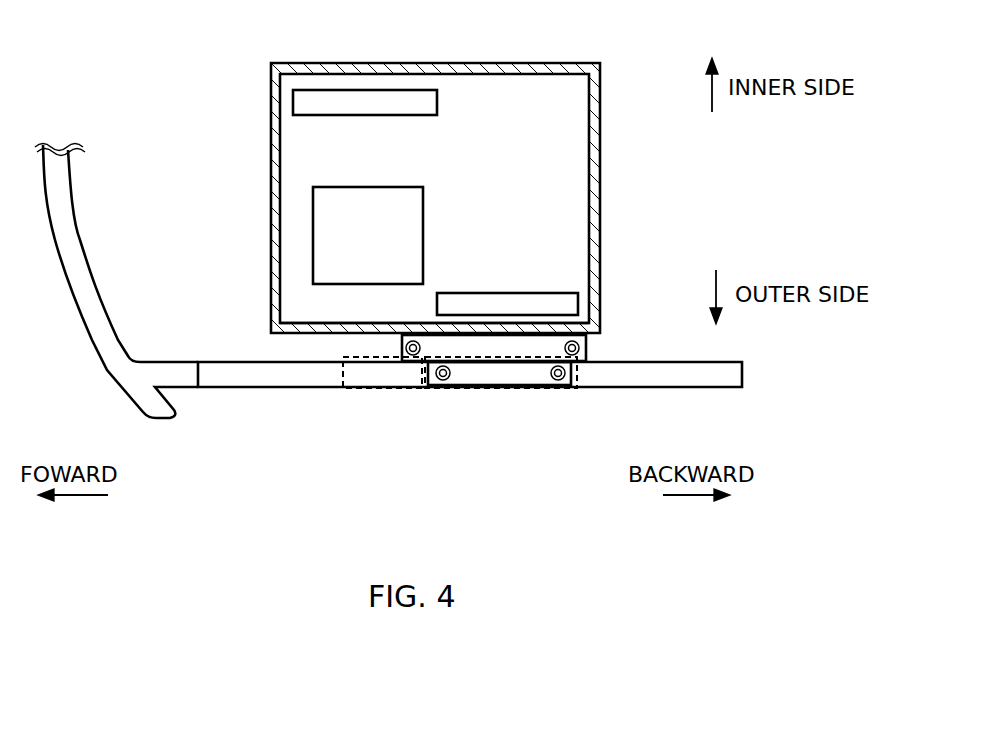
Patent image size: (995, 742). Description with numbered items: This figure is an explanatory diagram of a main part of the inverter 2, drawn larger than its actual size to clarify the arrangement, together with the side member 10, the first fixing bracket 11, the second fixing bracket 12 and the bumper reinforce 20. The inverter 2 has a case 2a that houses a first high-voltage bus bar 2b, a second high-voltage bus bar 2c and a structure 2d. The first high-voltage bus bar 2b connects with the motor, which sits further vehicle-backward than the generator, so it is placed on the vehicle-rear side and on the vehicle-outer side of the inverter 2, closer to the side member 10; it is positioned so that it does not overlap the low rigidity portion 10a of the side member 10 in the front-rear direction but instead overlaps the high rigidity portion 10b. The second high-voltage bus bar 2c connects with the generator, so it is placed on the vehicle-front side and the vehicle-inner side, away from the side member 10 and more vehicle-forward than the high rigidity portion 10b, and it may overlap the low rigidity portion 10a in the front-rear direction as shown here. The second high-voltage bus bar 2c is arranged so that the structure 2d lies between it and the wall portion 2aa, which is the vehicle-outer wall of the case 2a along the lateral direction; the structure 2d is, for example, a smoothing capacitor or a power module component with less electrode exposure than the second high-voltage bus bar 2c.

The inverter 2 is at (420, 181).
The case 2a is at (275, 188).
The wall portion 2aa is at (352, 328).
The first high-voltage bus bar 2b is at (572, 303).
The second high-voltage bus bar 2c is at (303, 104).
The structure 2d is at (327, 231).
The side member 10 is at (262, 378).
The low rigidity portion 10a is at (383, 389).
The high rigidity portion 10b is at (494, 389).
The first fixing bracket 11 is at (585, 352).
The second fixing bracket 12 is at (540, 375).
The bumper reinforce 20 is at (127, 373).